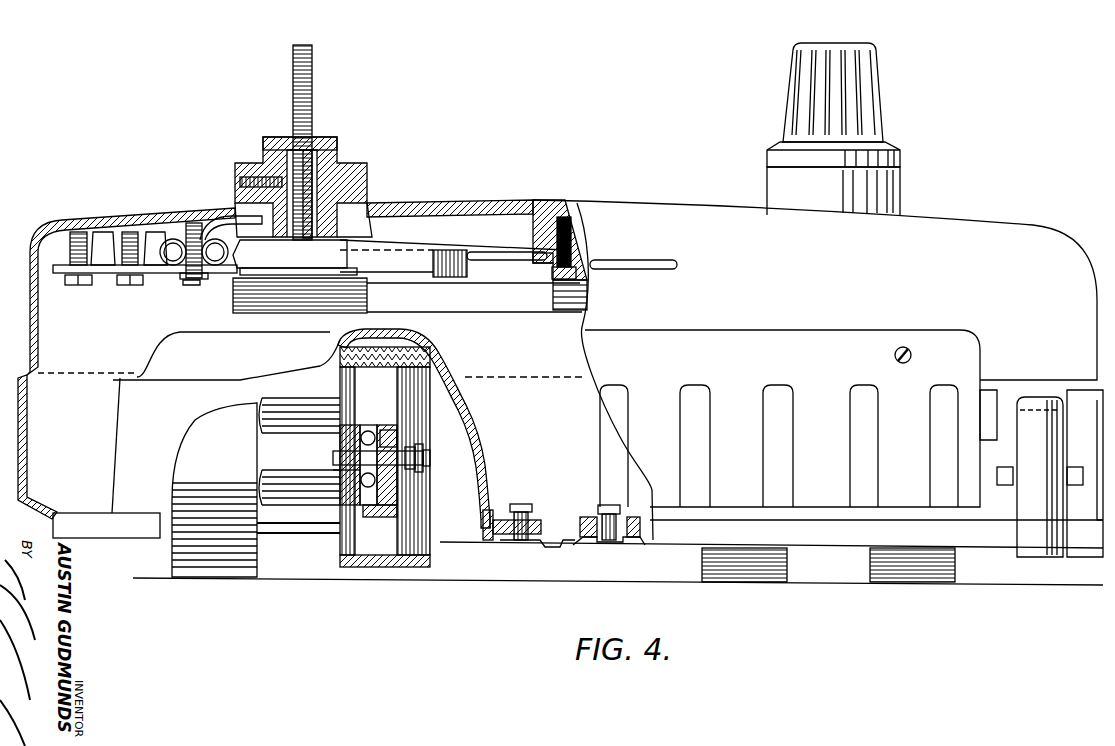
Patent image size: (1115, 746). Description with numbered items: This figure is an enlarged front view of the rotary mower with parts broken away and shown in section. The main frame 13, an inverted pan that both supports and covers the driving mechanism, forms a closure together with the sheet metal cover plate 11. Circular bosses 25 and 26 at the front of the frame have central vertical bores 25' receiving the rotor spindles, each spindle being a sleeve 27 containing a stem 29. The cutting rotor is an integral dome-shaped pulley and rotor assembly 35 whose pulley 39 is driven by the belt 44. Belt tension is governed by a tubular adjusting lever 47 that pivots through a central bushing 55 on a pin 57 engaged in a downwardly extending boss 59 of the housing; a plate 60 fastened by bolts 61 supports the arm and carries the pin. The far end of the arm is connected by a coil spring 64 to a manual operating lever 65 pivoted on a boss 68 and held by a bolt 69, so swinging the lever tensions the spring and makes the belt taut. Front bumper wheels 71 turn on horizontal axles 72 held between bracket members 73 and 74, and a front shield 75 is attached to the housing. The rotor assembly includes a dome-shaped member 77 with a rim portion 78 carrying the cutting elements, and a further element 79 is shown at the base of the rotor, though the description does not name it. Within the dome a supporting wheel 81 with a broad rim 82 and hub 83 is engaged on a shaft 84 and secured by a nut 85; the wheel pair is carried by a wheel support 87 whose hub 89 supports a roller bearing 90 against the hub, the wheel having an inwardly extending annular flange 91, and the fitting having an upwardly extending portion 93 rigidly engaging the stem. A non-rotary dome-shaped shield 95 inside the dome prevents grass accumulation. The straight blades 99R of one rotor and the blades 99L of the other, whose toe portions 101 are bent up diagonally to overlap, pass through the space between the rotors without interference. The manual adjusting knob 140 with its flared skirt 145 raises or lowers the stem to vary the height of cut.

The sheet metal cover plate 11 is at (547, 380).
The main frame 13 is at (520, 200).
The circular boss 25 is at (319, 200).
The central vertical bore 25' is at (246, 160).
The circular boss 26 is at (782, 178).
The sleeve 27 is at (316, 152).
The stem 29 is at (312, 124).
The pulley and rotor assembly 35 is at (470, 346).
The pulley 39 is at (372, 290).
The belt 44 is at (450, 300).
The adjusting lever 47 is at (160, 238).
The central bushing 55 is at (187, 280).
The pin 57 is at (190, 224).
The boss 59 is at (232, 228).
The plate 60 is at (105, 273).
The bolts 61 is at (68, 283).
The coil spring 64 is at (450, 250).
The manual operating lever 65 is at (533, 263).
The boss 68 is at (533, 231).
The bolt 69 is at (557, 280).
The front bumper wheels 71 is at (1045, 548).
The horizontal axles 72 is at (1078, 491).
The bracket member 73 is at (1078, 461).
The bracket member 74 is at (1000, 515).
The front shield 75 is at (805, 331).
The dome shaped member 77 is at (482, 486).
The rim portion 78 is at (488, 541).
The mounting screw 79 is at (640, 540).
The wheel 81 is at (380, 572).
The rim 82 is at (435, 563).
The hub 83 is at (345, 484).
The shaft 84 is at (340, 458).
The nut 85 is at (418, 456).
The wheel support 87 is at (305, 495).
The hub 89 is at (356, 410).
The roller bearing 90 is at (390, 437).
The annular flange 91 is at (356, 430).
The upwardly extending portion 93 is at (328, 395).
The dome shaped shield 95 is at (477, 477).
The blades 99L is at (548, 547).
The blades 99R is at (578, 548).
The toe portions 101 is at (545, 540).
The manual adjusting knob 140 is at (880, 93).
The flared skirt 145 is at (897, 150).